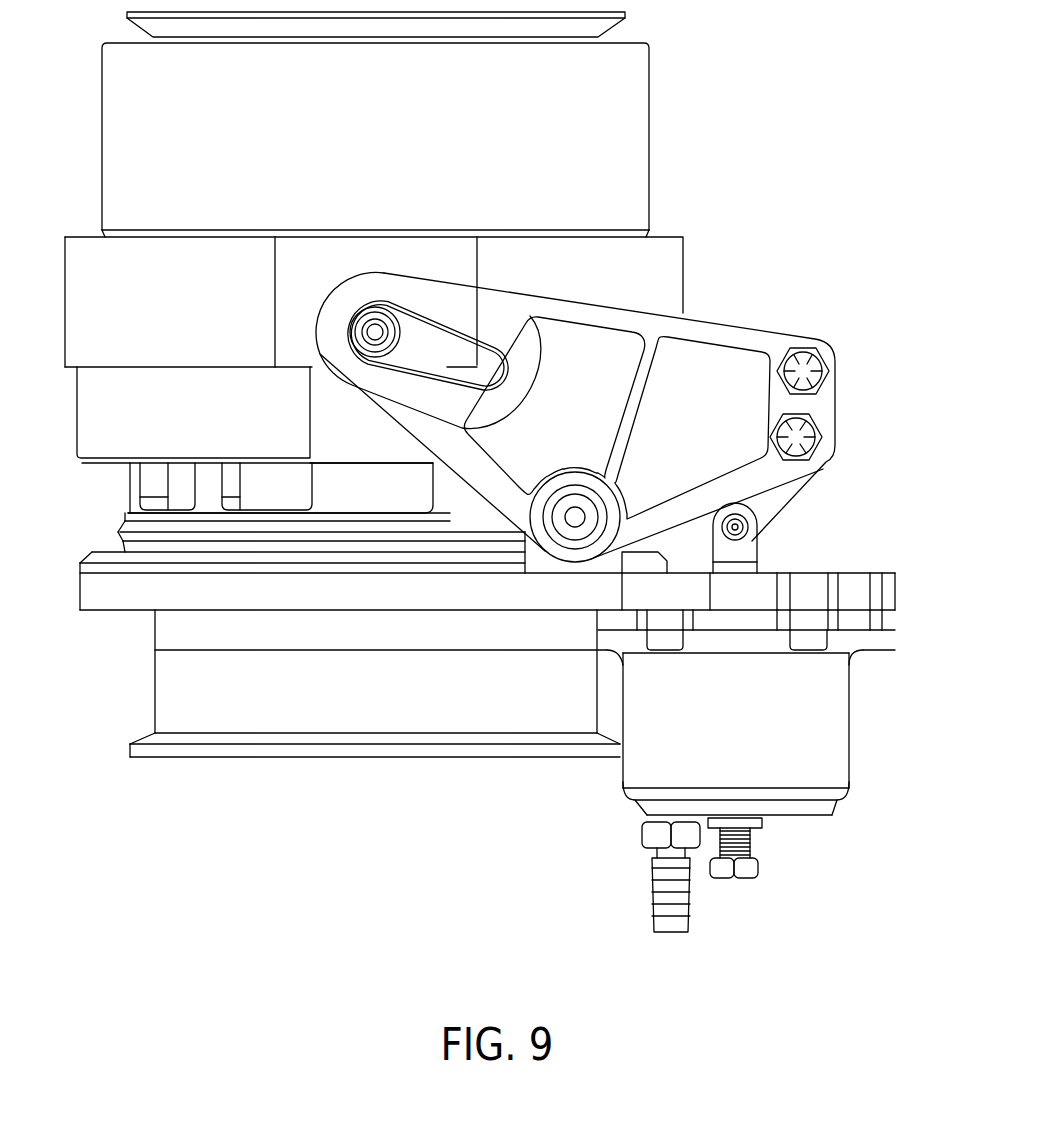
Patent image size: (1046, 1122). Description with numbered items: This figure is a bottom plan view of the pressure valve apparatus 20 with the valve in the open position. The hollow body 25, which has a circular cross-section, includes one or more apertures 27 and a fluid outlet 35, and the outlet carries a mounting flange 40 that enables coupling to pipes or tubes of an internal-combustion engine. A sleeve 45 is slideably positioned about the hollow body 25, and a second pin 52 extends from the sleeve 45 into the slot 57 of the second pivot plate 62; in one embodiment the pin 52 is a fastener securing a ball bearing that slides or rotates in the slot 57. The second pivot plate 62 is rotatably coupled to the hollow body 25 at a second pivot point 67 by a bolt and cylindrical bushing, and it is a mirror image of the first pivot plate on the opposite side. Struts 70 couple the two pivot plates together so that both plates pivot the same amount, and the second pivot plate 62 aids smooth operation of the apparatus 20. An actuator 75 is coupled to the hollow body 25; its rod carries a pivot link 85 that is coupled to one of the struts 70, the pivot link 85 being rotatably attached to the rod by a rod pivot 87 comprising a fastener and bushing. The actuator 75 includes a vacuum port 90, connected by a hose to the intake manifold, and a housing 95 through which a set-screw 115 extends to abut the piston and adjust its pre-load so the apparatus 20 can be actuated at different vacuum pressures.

The pressure valve apparatus 20 is at (780, 250).
The hollow body 25 is at (364, 141).
The apertures 27 is at (183, 478).
The fluid outlet 35 is at (367, 768).
The mounting flange 40 is at (127, 15).
The sleeve 45 is at (159, 311).
The second pin 52 is at (377, 330).
The slot 57 is at (432, 345).
The second pivot plate 62 is at (699, 436).
The second pivot point 67 is at (572, 507).
The struts 70 is at (820, 378).
The actuator 75 is at (855, 800).
The pivot link 85 is at (778, 493).
The rod pivot 87 is at (752, 533).
The vacuum port 90 is at (652, 888).
The housing 95 is at (726, 738).
The set-screw 115 is at (760, 863).